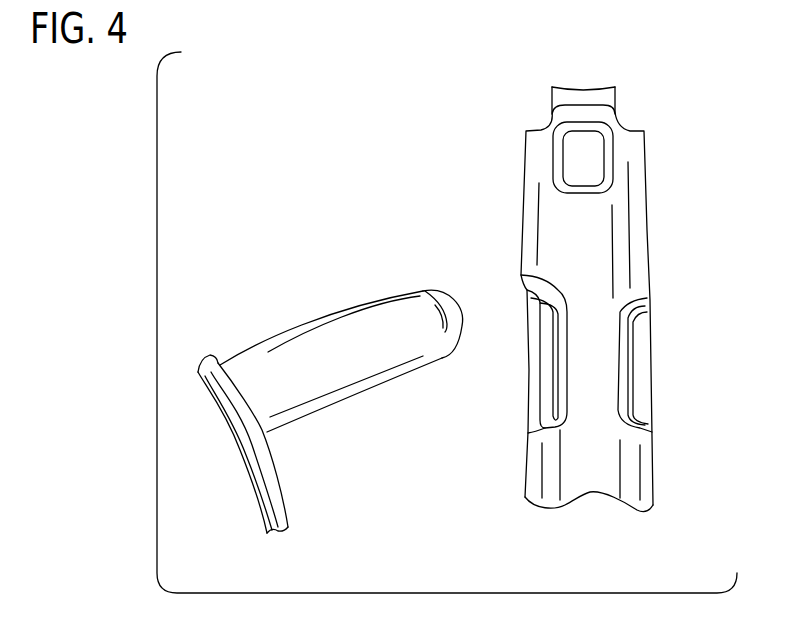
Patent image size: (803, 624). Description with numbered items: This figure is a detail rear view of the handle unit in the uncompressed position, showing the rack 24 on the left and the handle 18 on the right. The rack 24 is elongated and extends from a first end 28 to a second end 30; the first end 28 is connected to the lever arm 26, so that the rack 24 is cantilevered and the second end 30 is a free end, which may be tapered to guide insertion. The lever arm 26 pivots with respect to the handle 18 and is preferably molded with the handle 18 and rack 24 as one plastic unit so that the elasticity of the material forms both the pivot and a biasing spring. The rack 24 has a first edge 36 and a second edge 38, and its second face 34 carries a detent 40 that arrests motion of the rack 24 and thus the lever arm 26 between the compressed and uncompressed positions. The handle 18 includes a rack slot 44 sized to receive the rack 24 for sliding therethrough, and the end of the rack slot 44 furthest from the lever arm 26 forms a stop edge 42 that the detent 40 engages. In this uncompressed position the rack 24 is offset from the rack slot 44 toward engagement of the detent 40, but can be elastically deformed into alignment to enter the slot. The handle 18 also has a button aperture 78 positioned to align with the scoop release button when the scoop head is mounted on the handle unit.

The handle 18 is at (620, 245).
The button aperture 78 is at (587, 163).
The stop edge 42 is at (637, 367).
The rack slot 44 is at (537, 393).
The rack 24 is at (353, 302).
The second end 30 is at (457, 302).
The detent 40 is at (434, 323).
The first edge 36 is at (297, 323).
The second edge 38 is at (358, 390).
The second face 34 is at (290, 377).
The first end 28 is at (248, 398).
The lever arm 26 is at (283, 497).